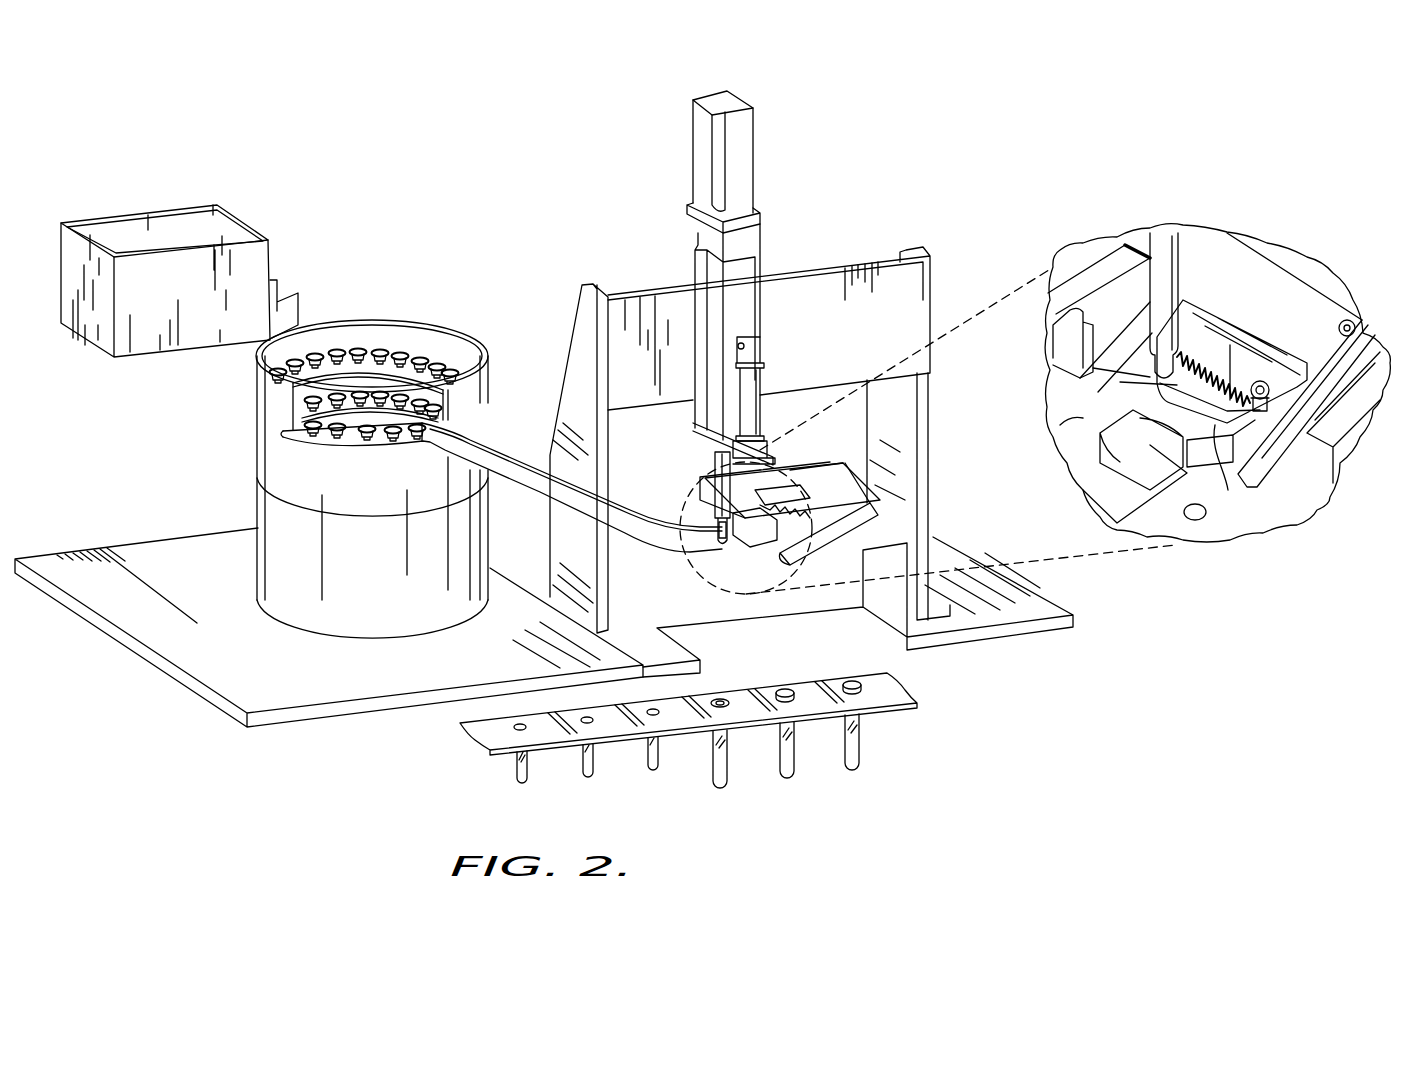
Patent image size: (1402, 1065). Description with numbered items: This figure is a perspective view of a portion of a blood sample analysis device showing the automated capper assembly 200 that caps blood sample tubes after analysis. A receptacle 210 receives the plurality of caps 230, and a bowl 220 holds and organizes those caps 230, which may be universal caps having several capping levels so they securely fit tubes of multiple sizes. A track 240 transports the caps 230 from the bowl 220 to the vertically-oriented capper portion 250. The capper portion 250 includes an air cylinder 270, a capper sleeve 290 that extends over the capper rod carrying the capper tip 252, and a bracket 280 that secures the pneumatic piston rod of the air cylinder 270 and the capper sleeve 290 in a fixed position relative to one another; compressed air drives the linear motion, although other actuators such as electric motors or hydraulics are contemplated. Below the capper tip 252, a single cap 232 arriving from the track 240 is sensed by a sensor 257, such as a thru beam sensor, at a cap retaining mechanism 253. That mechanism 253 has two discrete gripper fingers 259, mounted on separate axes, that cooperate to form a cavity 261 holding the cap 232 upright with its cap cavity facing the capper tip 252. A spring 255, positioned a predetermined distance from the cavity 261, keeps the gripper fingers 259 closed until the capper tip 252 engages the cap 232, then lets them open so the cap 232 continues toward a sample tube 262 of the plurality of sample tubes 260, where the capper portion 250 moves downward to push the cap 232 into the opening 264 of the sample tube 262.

The capper assembly 200 is at (1033, 117).
The receptacle 210 is at (274, 254).
The bowl 220 is at (261, 468).
The plurality of caps 230 is at (402, 351).
The track 240 is at (516, 470).
The vertically-oriented capper portion 250 is at (747, 298).
The capper tip 252 is at (745, 528).
The cap retaining mechanism 253 is at (742, 566).
The spring 255 is at (777, 558).
The sensor 257 is at (847, 520).
The gripper fingers 259 is at (1206, 516).
The plurality of sample tubes 260 is at (705, 747).
The cavity 261 is at (1162, 425).
The sample tube 262 is at (720, 790).
The opening 264 is at (716, 700).
The air cylinder 270 is at (757, 407).
The bracket 280 is at (700, 440).
The capper sleeve 290 is at (737, 487).
The cap 232 is at (718, 548).